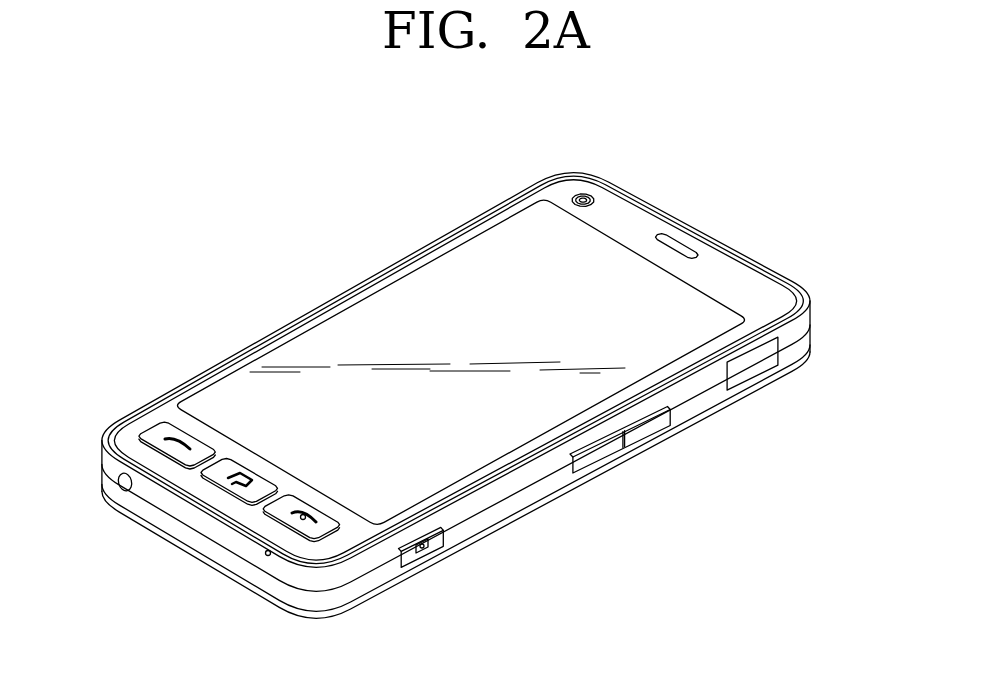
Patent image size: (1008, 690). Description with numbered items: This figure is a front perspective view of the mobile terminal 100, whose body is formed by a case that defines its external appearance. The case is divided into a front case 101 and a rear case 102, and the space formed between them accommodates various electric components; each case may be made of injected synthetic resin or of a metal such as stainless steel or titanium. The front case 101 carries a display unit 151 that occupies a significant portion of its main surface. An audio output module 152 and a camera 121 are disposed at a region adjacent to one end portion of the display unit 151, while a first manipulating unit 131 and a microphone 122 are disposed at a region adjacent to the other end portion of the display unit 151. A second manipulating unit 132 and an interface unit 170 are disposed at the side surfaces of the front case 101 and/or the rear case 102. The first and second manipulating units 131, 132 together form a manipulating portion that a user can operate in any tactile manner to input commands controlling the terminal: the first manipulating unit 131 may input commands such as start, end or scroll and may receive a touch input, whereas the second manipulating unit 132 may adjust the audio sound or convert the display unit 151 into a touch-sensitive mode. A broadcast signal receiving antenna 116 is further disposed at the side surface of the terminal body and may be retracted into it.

The mobile terminal 100 is at (405, 222).
The front case 101 is at (800, 328).
The rear case 102 is at (800, 350).
The display unit 151 is at (385, 298).
The camera 121 is at (598, 203).
The audio output module 152 is at (680, 244).
The first manipulating unit 131 is at (158, 432).
The second manipulating unit 132 is at (600, 458).
The interface unit 170 is at (753, 370).
The broadcast signal receiving antenna 116 is at (120, 485).
The microphone 122 is at (266, 554).